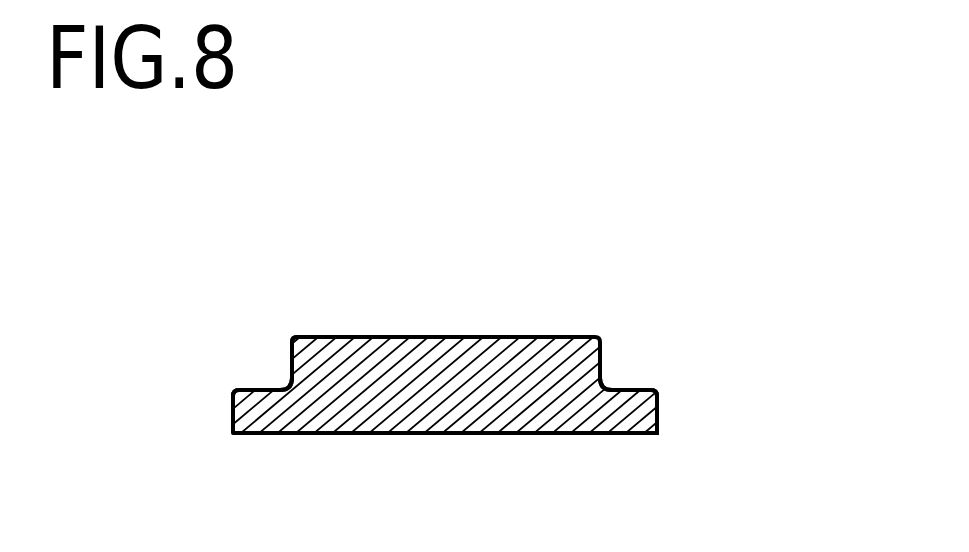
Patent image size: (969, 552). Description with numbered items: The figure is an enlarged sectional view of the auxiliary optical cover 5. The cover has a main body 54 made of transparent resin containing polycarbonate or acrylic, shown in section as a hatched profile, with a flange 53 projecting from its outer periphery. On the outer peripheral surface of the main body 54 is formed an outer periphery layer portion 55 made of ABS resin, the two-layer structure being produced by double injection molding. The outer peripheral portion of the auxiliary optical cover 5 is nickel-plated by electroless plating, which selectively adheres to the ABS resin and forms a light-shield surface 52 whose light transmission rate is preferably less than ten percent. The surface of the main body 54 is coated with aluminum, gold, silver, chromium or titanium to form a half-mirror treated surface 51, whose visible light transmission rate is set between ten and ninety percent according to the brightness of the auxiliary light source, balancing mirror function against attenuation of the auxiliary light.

The auxiliary optical cover 5 is at (223, 232).
The half-mirror treated surface 51 is at (442, 336).
The light-shield surface 52 is at (604, 363).
The flange 53 is at (628, 418).
The main body 54 is at (352, 344).
The outer periphery layer portion 55 is at (289, 363).